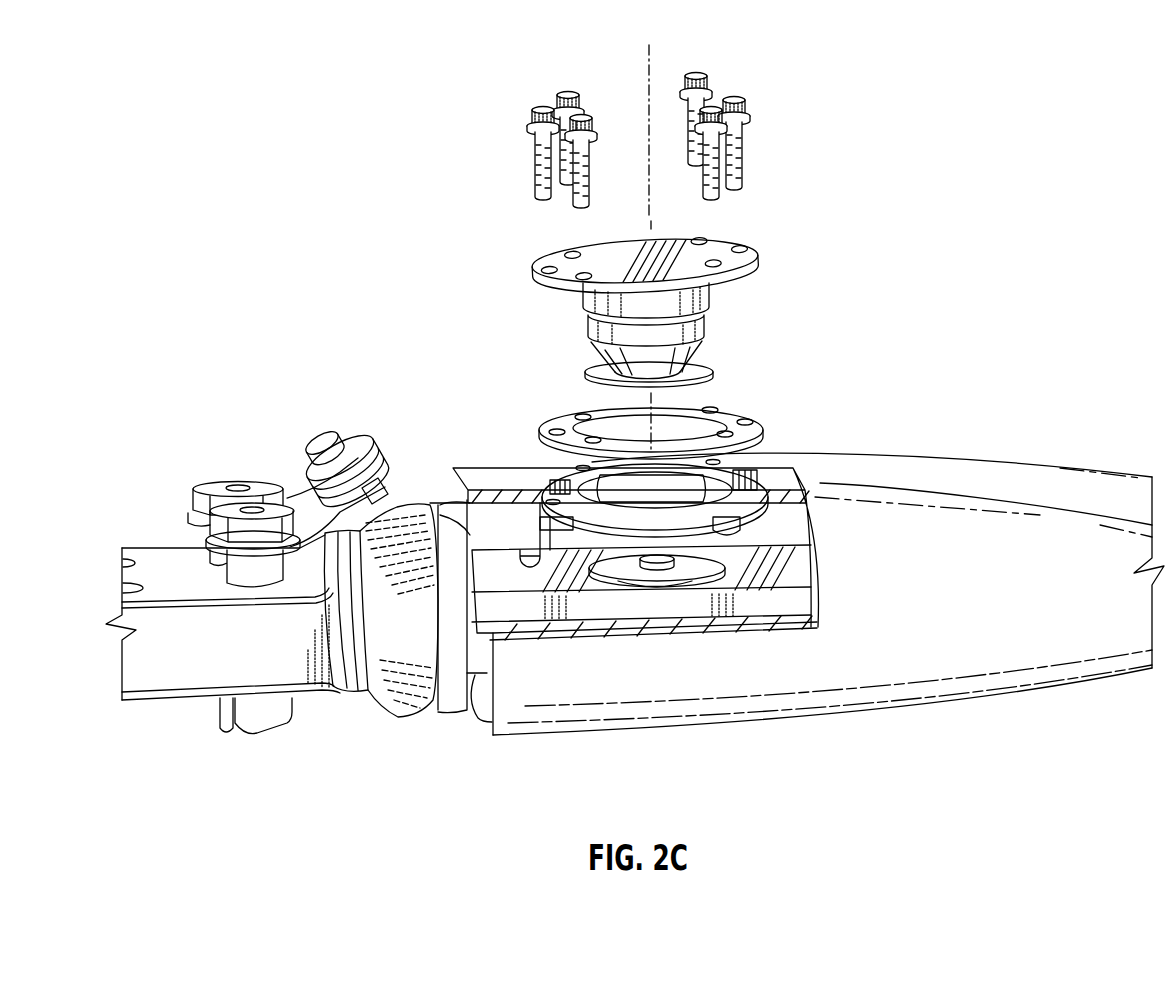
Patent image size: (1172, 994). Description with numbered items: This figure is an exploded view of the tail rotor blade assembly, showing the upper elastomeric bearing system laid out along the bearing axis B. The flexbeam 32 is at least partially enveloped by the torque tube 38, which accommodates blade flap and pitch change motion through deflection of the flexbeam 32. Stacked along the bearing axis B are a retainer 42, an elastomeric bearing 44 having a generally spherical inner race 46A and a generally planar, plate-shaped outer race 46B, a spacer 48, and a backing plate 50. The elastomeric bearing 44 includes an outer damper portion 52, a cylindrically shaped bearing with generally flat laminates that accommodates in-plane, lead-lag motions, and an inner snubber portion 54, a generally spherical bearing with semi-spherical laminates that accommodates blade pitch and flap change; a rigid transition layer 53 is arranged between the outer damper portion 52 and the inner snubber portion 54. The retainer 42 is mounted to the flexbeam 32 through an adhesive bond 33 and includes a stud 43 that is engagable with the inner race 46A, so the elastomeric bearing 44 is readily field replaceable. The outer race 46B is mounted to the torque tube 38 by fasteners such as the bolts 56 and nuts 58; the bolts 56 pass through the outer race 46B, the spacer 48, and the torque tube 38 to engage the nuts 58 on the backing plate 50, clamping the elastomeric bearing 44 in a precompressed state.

The bearing axis B is at (647, 68).
The bolt 56 is at (756, 153).
The elastomeric bearing 44 is at (671, 295).
The outer race 46B is at (719, 252).
The outer damper portion 52 is at (582, 298).
The rigid transition layer 53 is at (588, 327).
The inner snubber portion 54 is at (698, 355).
The inner race 46A is at (707, 367).
The spacer 48 is at (767, 427).
The torque tube 38 is at (467, 530).
The flexbeam 32 is at (580, 584).
The backing plate 50 is at (800, 522).
The nut 58 is at (760, 510).
The retainer 42 is at (708, 568).
The stud 43 is at (627, 567).
The adhesive bond 33 is at (654, 584).